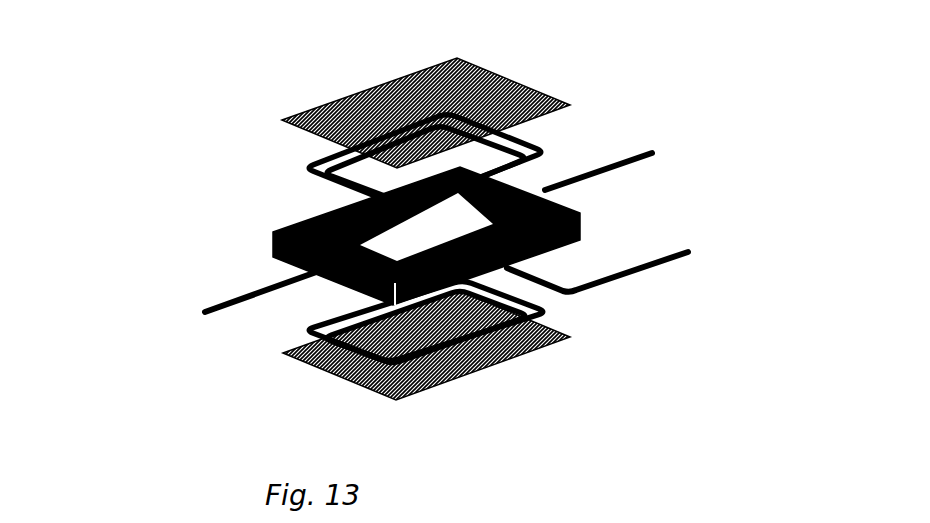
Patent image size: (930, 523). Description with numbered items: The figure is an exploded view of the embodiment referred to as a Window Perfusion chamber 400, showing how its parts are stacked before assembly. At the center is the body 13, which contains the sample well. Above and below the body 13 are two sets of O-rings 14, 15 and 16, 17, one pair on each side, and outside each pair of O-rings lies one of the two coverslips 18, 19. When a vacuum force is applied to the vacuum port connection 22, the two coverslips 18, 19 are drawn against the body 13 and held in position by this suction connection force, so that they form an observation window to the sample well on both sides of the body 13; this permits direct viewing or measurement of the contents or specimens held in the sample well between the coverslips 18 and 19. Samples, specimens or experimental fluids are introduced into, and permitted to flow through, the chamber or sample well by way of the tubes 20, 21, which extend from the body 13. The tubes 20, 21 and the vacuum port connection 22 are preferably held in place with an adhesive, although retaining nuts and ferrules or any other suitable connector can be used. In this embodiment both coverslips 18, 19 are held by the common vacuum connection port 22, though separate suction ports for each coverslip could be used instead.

The body 13 is at (241, 231).
The O-ring 14 is at (272, 327).
The O-ring 15 is at (281, 346).
The O-ring 16 is at (576, 115).
The O-ring 17 is at (572, 141).
The coverslip 18 is at (551, 367).
The coverslip 19 is at (298, 93).
The tube 20 is at (210, 287).
The tube 21 is at (673, 165).
The vacuum port connection 22 is at (660, 291).
The Window Perfusion chamber 400 is at (683, 238).